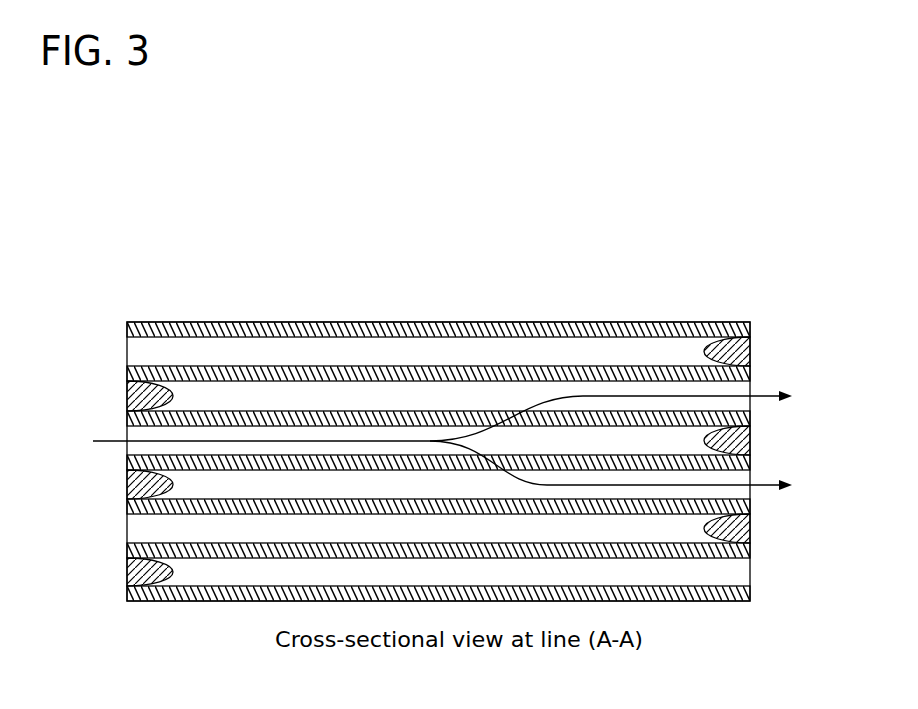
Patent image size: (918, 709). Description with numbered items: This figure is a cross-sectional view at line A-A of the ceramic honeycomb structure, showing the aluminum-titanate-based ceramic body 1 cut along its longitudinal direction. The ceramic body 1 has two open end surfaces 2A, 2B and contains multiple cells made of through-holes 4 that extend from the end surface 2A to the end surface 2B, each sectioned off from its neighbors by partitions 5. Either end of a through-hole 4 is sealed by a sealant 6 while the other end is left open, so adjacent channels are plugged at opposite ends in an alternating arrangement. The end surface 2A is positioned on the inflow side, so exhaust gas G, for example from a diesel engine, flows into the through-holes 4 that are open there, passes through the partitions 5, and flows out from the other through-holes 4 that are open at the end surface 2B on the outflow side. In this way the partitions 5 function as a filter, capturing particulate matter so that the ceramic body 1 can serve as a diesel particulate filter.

The ceramic body 1 is at (197, 287).
The through-hole 4 is at (135, 358).
The partition 5 is at (308, 371).
The sealant 6 is at (736, 355).
The end surface 2A is at (126, 569).
The end surface 2B is at (736, 531).
The exhaust gas G is at (433, 440).